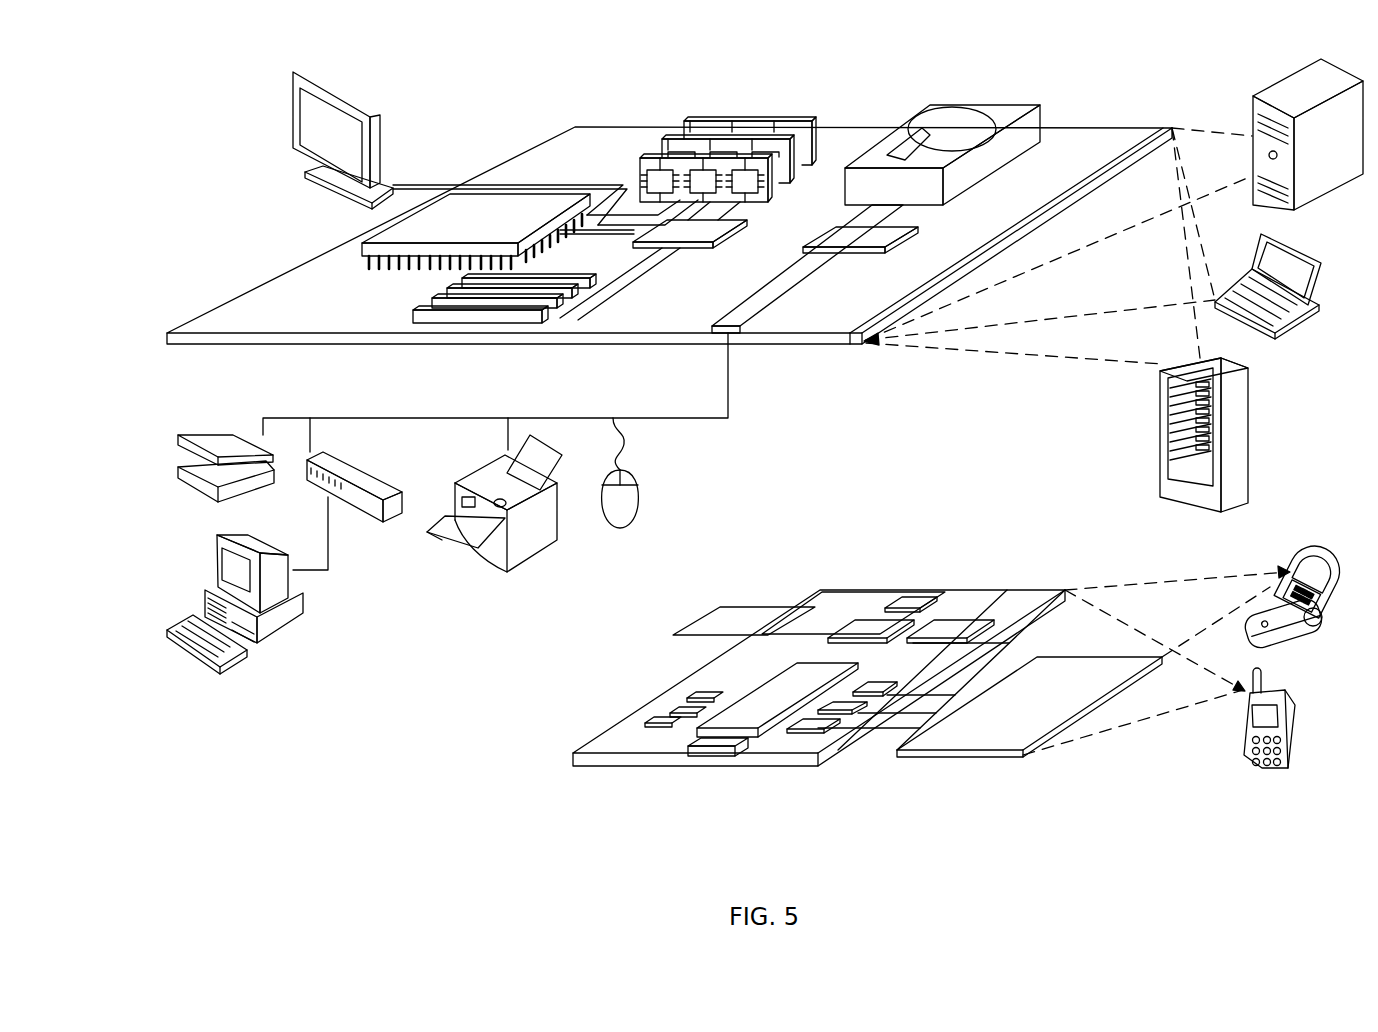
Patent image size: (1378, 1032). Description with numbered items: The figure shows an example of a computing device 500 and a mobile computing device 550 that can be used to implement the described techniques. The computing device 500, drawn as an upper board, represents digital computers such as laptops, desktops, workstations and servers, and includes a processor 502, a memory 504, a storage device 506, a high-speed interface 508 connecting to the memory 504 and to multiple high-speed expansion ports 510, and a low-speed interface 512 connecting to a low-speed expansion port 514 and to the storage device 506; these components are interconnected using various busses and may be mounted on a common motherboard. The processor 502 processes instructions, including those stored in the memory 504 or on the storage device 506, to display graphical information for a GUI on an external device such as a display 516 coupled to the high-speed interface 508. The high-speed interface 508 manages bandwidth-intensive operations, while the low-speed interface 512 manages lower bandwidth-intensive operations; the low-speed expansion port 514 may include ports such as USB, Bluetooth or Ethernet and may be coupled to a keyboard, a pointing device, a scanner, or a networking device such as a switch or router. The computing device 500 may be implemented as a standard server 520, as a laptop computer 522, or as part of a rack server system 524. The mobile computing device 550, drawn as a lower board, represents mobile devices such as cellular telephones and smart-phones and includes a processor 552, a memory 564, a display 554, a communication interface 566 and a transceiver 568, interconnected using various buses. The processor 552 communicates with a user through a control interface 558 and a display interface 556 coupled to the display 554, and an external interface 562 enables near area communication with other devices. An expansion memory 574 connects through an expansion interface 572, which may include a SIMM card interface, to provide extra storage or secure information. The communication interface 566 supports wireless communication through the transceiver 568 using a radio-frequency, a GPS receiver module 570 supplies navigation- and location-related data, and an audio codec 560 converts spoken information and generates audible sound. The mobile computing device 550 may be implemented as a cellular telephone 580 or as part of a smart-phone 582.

The computing device 500 is at (491, 97).
The processor 502 is at (370, 248).
The memory 504 is at (690, 120).
The storage device 506 is at (935, 103).
The high-speed interface 508 is at (670, 232).
The high-speed expansion ports 510 is at (432, 303).
The low-speed interface 512 is at (842, 233).
The low-speed expansion port 514 is at (758, 338).
The display 516 is at (293, 72).
The standard server 520 is at (1251, 112).
The laptop computer 522 is at (1323, 260).
The rack server system 524 is at (1160, 460).
The mobile computing device 550 is at (547, 764).
The processor 552 is at (750, 722).
The display 554 is at (990, 740).
The display interface 556 is at (818, 730).
The control interface 558 is at (850, 708).
The audio codec 560 is at (875, 688).
The external interface 562 is at (715, 766).
The memory 564 is at (662, 712).
The communication interface 566 is at (870, 628).
The transceiver 568 is at (948, 627).
The GPS receiver module 570 is at (923, 595).
The expansion interface 572 is at (798, 600).
The expansion memory 574 is at (723, 605).
The cellular telephone 580 is at (1303, 548).
The smart-phone 582 is at (1243, 723).